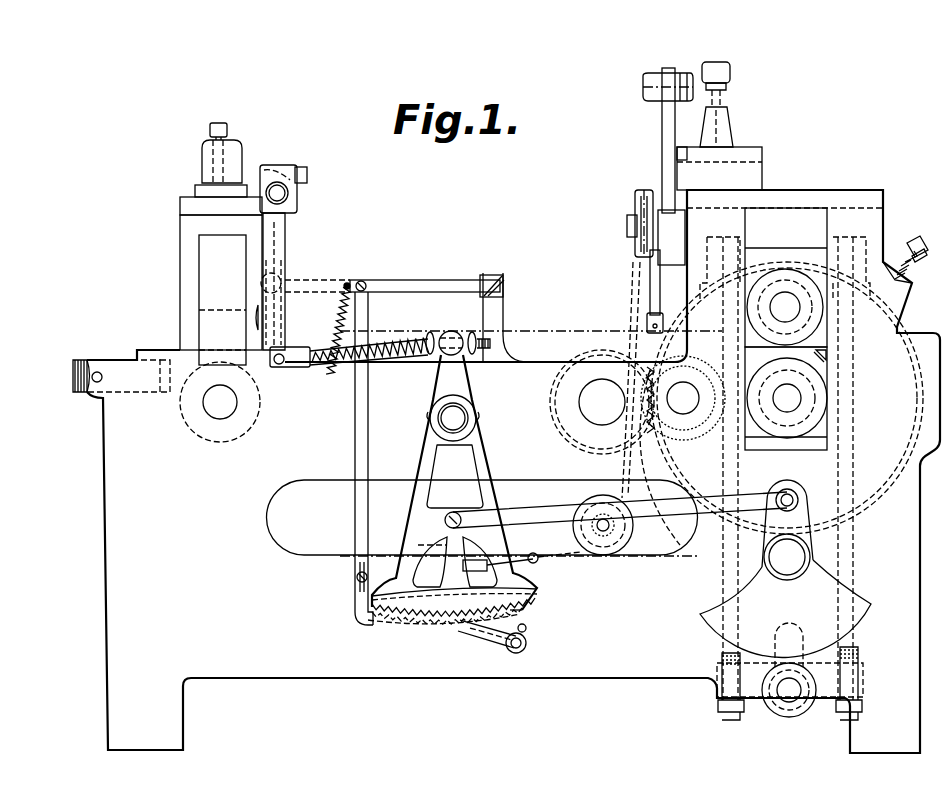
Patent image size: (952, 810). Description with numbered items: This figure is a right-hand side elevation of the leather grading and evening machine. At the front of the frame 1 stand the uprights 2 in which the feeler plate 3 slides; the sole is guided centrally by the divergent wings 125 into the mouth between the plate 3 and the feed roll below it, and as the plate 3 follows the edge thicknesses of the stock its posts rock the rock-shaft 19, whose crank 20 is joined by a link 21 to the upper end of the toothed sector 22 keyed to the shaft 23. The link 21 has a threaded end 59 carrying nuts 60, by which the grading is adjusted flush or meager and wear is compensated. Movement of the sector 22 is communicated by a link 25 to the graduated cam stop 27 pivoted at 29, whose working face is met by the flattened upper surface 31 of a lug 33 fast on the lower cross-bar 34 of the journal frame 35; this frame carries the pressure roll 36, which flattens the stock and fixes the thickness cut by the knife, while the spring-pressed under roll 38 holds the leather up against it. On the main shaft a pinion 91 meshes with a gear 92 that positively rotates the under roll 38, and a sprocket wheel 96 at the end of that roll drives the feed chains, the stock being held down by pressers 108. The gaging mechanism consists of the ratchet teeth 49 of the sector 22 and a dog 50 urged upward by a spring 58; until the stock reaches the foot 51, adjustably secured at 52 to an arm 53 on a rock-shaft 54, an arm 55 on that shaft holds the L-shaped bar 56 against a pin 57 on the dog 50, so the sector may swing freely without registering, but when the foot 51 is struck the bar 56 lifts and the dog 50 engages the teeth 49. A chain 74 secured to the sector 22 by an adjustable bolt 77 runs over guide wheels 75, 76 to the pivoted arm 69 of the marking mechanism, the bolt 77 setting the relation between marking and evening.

The frame 1 is at (513, 471).
The uprights 2 is at (190, 262).
The plate 3 is at (222, 300).
The rock-shaft 19 is at (289, 194).
The crank 20 is at (284, 236).
The link 21 is at (314, 365).
The toothed sector 22 is at (412, 514).
The shaft 23 is at (448, 421).
The link 25 is at (619, 510).
The cam stop 27 is at (785, 613).
The pivot 29 is at (787, 530).
The flattened upper surface 31 is at (795, 670).
The lug 33 is at (778, 708).
The lower cross-bar 34 is at (843, 718).
The journal frame 35 is at (848, 445).
The adjusting roll 36 is at (766, 278).
The under roll 38 is at (820, 390).
The teeth 49 is at (522, 612).
The dog 50 is at (502, 650).
The foot 51 is at (503, 320).
The adjustable securing point 52 is at (493, 263).
The arm 53 is at (393, 286).
The rock-shaft 54 is at (278, 284).
The arm 55 is at (338, 293).
The L-shaped bar 56 is at (413, 624).
The pin 57 is at (465, 622).
The spring 58 is at (527, 629).
The threaded end 59 is at (439, 341).
The nuts 60 is at (428, 357).
The pivoted arm 69 is at (661, 135).
The chain 74 is at (648, 290).
The guide wheel 75 is at (640, 246).
The guide wheel 76 is at (610, 550).
The adjustable bolt 77 is at (538, 562).
The pinion 91 is at (556, 403).
The gear 92 is at (665, 463).
The sprocket wheel 96 is at (690, 425).
The pressers 108 is at (547, 336).
The divergent wings 125 is at (112, 363).